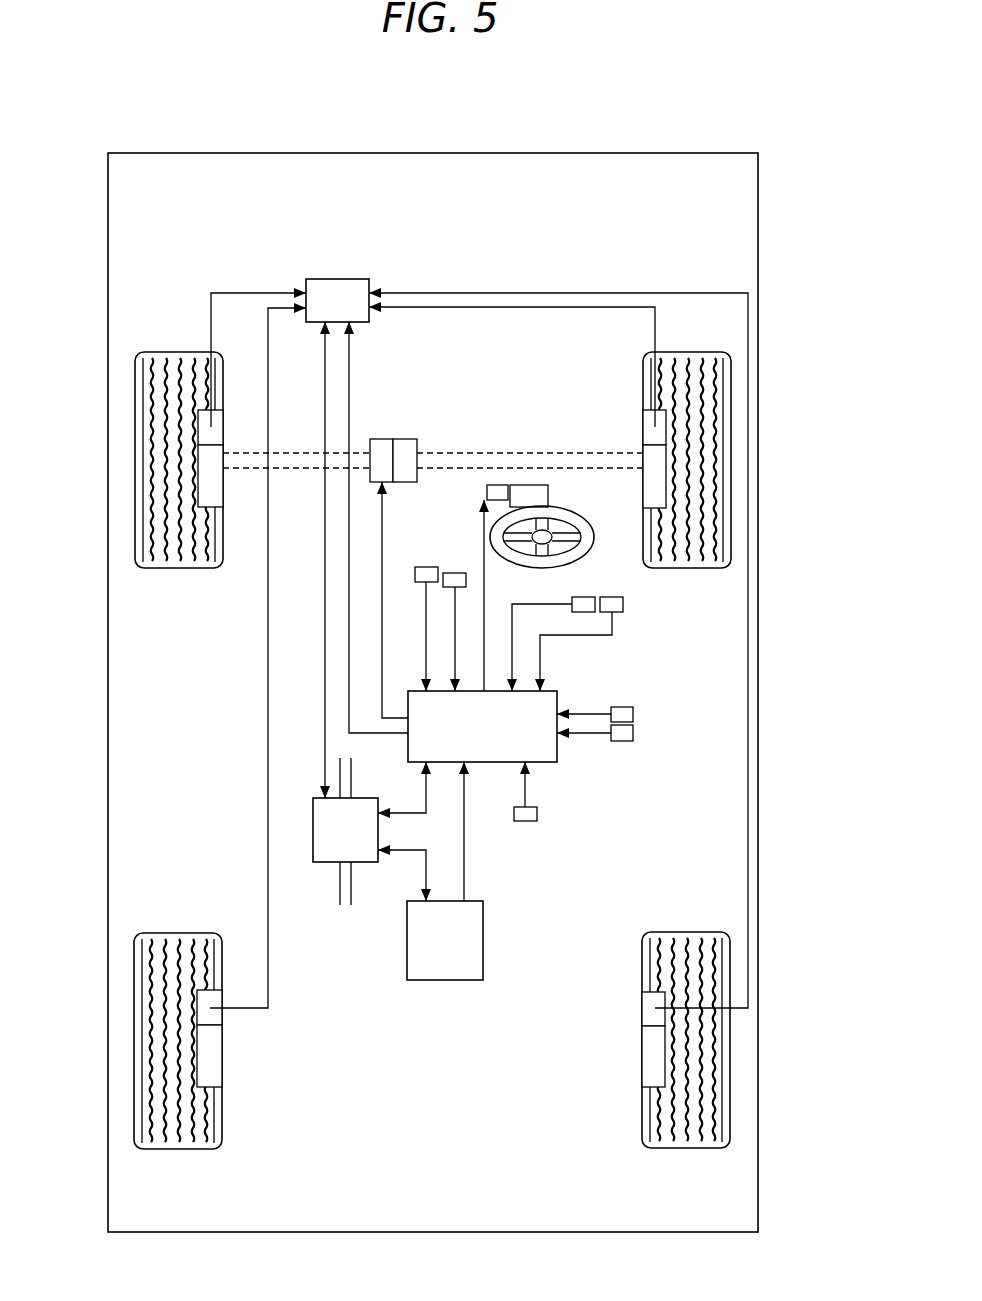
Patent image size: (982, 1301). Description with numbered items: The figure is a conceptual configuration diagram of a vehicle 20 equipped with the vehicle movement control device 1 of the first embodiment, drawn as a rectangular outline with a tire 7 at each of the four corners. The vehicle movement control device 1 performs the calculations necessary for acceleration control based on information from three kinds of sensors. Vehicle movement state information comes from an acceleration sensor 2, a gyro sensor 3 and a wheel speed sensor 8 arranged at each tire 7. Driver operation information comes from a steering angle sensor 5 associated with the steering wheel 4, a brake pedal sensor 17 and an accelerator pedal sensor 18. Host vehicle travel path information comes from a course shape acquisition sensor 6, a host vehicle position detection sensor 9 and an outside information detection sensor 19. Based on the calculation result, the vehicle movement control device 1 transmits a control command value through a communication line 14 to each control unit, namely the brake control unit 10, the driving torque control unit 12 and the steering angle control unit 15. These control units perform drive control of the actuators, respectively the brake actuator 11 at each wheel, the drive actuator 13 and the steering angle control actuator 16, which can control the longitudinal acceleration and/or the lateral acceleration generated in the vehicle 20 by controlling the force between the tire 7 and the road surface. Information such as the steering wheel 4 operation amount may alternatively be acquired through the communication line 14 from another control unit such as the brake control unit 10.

The vehicle movement control device 1 is at (560, 756).
The acceleration sensor 2 is at (633, 738).
The gyro sensor 3 is at (633, 712).
The steering wheel 4 is at (578, 518).
The steering angle sensor 5 is at (455, 573).
The course shape acquisition sensor 6 is at (426, 567).
The tire 7 is at (135, 386).
The wheel speed sensor 8 is at (205, 428).
The host vehicle position detection sensor 9 is at (447, 980).
The brake control unit 10 is at (330, 279).
The brake actuator 11 is at (205, 486).
The driving torque control unit 12 is at (382, 439).
The drive actuator 13 is at (405, 439).
The communication line 14 is at (314, 862).
The steering angle control unit 15 is at (494, 485).
The steering angle control actuator 16 is at (526, 485).
The brake pedal sensor 17 is at (585, 597).
The accelerator pedal sensor 18 is at (623, 605).
The outside information detection sensor 19 is at (525, 821).
The vehicle 20 is at (760, 128).